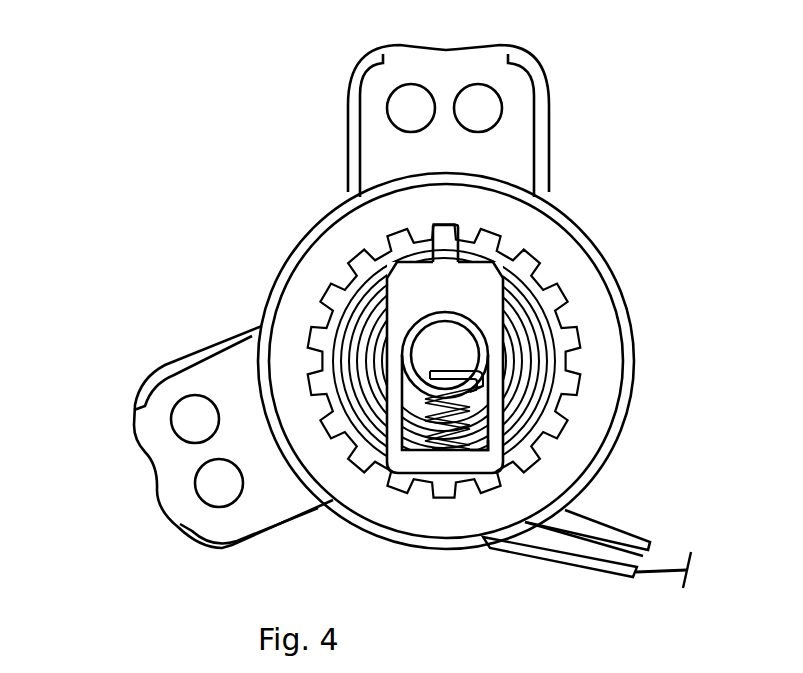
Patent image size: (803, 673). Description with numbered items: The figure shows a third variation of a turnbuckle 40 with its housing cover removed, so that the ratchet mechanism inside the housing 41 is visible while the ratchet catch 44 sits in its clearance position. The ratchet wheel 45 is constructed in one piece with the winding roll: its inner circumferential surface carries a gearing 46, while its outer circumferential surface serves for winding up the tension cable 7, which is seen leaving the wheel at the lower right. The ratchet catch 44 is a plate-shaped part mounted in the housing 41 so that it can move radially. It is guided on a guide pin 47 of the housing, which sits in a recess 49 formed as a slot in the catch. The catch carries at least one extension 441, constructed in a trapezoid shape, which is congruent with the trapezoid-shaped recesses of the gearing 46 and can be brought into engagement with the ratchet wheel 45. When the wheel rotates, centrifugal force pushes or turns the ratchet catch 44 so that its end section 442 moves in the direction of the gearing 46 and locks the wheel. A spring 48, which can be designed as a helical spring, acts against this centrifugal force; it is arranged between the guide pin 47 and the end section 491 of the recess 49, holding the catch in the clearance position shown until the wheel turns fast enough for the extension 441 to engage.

The turnbuckle 40 is at (168, 132).
The housing 41 is at (592, 250).
The ratchet catch 44 is at (398, 347).
The extension 441 is at (443, 250).
The end section 442 is at (425, 300).
The ratchet wheel 45 is at (587, 404).
The gearing 46 is at (570, 345).
The guide pin 47 is at (450, 348).
The spring 48 is at (420, 430).
The recess 49 is at (412, 380).
The end section of the recess 491 is at (487, 453).
The tension cable 7 is at (657, 552).